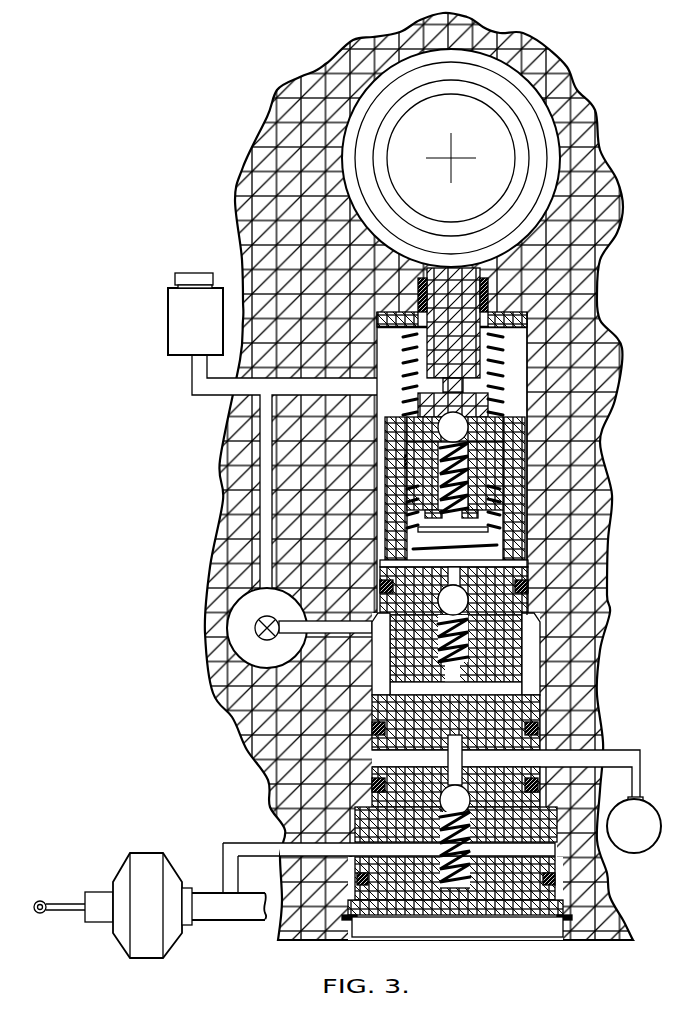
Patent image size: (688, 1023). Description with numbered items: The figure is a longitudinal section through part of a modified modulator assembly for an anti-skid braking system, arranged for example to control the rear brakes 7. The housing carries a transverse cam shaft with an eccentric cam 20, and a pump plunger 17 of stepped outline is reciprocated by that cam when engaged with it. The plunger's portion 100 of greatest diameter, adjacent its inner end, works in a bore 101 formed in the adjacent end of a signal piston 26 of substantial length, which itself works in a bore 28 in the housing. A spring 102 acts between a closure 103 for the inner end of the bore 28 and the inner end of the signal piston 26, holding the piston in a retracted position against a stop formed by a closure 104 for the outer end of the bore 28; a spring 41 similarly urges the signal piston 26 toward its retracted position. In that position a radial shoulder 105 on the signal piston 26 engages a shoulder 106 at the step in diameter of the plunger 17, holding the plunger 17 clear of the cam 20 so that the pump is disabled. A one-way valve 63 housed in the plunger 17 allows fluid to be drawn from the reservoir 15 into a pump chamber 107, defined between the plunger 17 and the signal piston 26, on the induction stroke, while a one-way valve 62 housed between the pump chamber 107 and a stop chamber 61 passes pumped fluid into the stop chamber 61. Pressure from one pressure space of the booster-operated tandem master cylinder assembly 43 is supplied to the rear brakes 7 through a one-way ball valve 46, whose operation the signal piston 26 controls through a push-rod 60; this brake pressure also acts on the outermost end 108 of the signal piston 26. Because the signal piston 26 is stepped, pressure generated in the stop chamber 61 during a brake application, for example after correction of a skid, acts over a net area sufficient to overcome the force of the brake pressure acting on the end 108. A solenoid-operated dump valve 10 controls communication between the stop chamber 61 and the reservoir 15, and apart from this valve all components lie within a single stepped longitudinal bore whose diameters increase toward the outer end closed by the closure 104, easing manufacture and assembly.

The rear brakes 7 is at (645, 800).
The solenoid-operated dump valve 10 is at (250, 660).
The reservoir 15 is at (183, 322).
The pump plunger 17 is at (453, 345).
The eccentric cam 20 is at (525, 115).
The signal piston 26 is at (510, 632).
The bore 28 is at (527, 565).
The spring 41 is at (520, 548).
The booster-operated tandem master cylinder assembly 43 is at (235, 912).
The one-way ball valve 46 is at (447, 803).
The push-rod 60 is at (537, 740).
The stop chamber 61 is at (510, 690).
The one-way valve 62 is at (437, 607).
The one-way valve 63 is at (503, 398).
The portion of greatest diameter 100 is at (520, 457).
The bore 101 is at (600, 465).
The spring 102 is at (527, 365).
The closure 103 is at (568, 322).
The closure 104 is at (527, 887).
The radial shoulder 105 is at (525, 422).
The shoulder 106 is at (388, 463).
The pump chamber 107 is at (385, 562).
The outermost end 108 is at (395, 768).